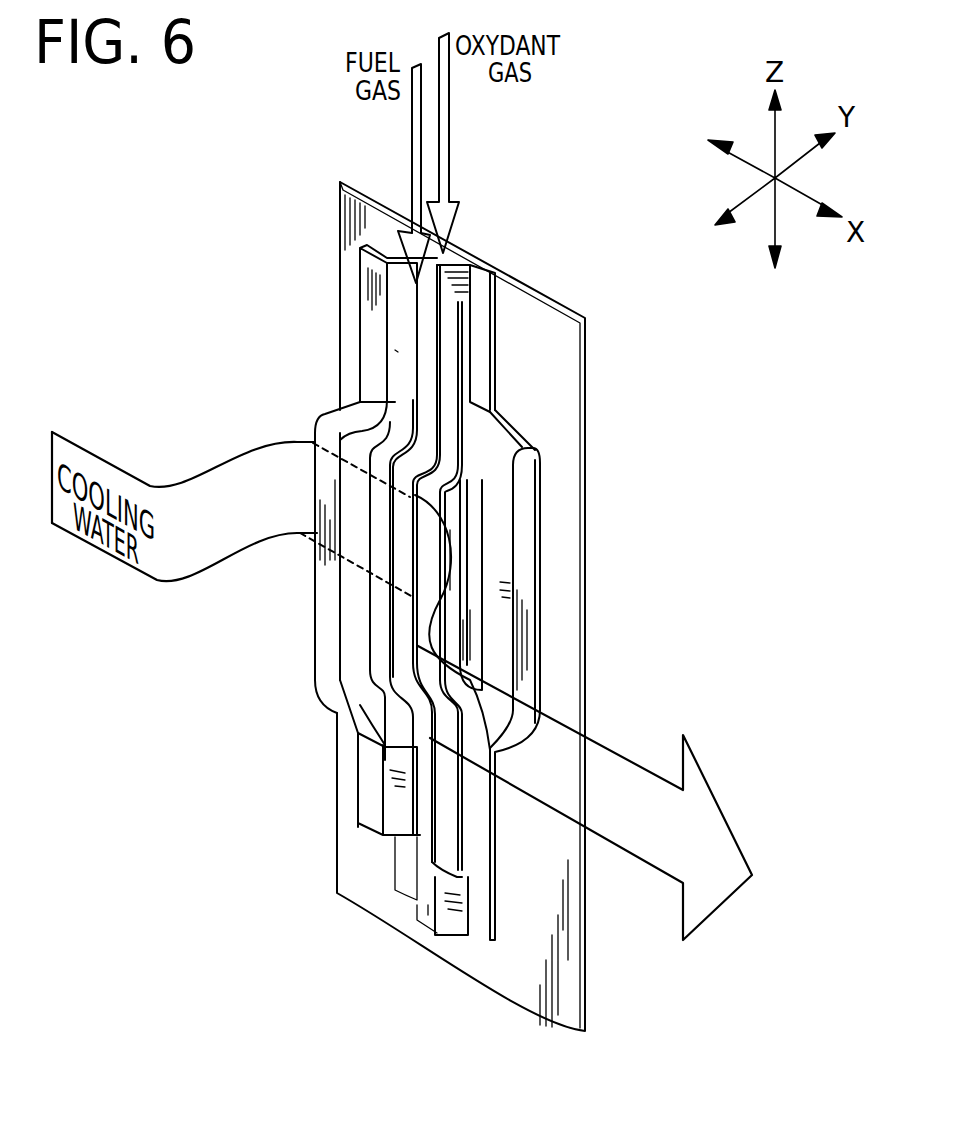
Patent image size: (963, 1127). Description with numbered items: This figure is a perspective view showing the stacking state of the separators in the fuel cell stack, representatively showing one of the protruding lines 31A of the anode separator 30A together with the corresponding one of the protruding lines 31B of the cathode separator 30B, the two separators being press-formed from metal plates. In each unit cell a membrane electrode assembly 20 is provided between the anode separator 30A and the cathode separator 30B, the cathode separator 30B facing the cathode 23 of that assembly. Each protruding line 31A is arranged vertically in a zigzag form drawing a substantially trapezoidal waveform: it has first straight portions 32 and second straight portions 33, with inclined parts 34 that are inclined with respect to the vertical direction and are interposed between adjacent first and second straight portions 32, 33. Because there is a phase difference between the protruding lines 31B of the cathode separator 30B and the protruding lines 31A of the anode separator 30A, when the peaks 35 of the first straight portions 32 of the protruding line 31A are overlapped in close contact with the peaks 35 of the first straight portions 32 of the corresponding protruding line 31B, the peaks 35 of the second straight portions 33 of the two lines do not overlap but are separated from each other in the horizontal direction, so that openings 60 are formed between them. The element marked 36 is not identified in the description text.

The membrane electrode assembly 20 is at (562, 300).
The cathode 23 is at (557, 337).
The anode separator 30A is at (332, 530).
The cathode separator 30B is at (514, 554).
The protruding line 31A is at (400, 324).
The protruding line 31B is at (430, 253).
The first straight portion 32 is at (398, 376).
The second straight portion 33 is at (358, 630).
The inclined part 34 is at (330, 413).
The peak 35 is at (403, 913).
The lower flat portion 36 is at (372, 785).
The opening 60 is at (480, 485).